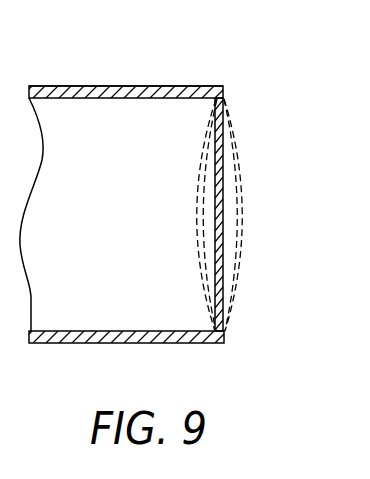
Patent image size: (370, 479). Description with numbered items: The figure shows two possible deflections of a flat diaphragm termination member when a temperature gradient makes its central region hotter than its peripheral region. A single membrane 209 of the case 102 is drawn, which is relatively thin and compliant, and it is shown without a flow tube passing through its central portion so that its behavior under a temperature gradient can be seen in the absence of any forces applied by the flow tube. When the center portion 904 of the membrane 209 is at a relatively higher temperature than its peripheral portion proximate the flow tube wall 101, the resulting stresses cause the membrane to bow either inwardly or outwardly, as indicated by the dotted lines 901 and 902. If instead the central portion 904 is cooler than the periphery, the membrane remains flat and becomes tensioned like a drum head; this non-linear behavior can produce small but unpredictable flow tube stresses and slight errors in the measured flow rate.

The flow tube wall 101 is at (162, 97).
The case 102 is at (122, 75).
The membrane 209 is at (219, 185).
The dotted line 901 is at (203, 147).
The dotted line 902 is at (235, 152).
The center portion 904 is at (219, 213).